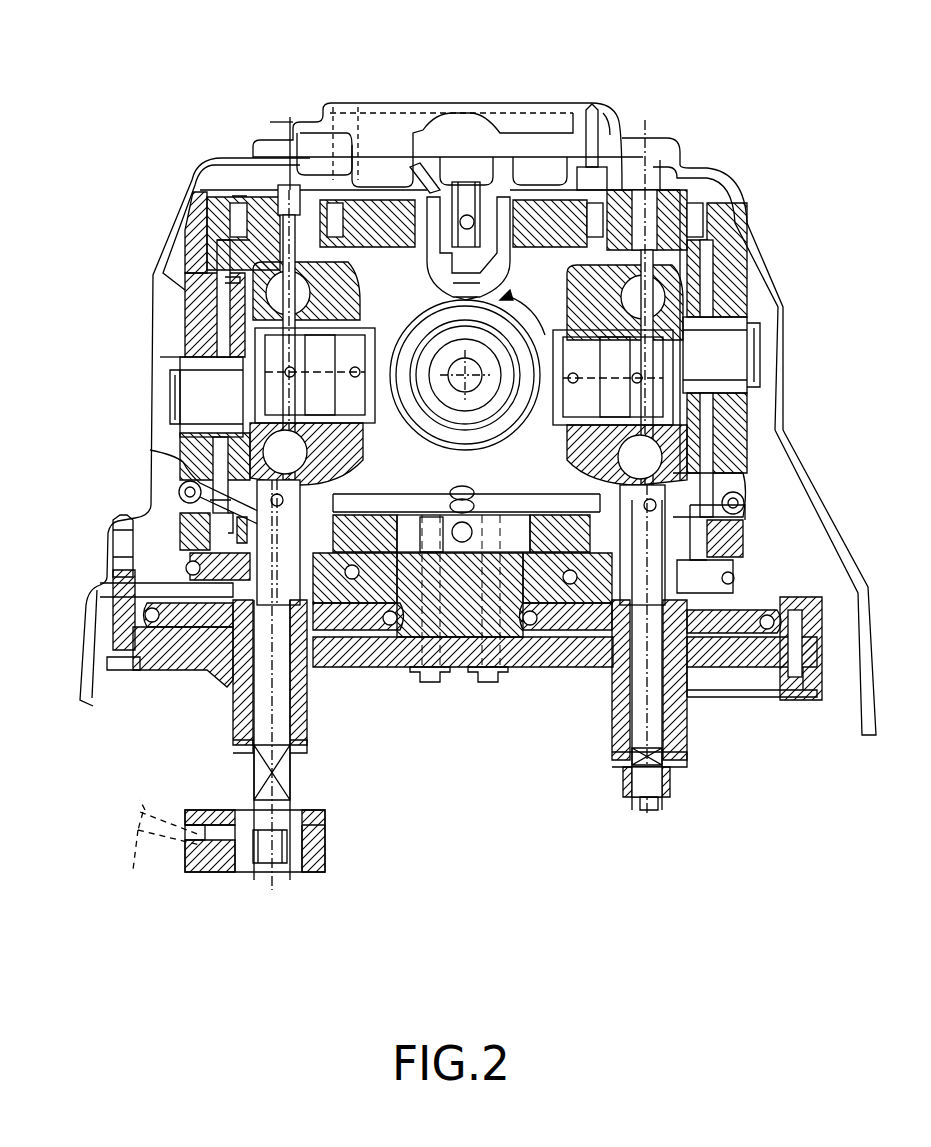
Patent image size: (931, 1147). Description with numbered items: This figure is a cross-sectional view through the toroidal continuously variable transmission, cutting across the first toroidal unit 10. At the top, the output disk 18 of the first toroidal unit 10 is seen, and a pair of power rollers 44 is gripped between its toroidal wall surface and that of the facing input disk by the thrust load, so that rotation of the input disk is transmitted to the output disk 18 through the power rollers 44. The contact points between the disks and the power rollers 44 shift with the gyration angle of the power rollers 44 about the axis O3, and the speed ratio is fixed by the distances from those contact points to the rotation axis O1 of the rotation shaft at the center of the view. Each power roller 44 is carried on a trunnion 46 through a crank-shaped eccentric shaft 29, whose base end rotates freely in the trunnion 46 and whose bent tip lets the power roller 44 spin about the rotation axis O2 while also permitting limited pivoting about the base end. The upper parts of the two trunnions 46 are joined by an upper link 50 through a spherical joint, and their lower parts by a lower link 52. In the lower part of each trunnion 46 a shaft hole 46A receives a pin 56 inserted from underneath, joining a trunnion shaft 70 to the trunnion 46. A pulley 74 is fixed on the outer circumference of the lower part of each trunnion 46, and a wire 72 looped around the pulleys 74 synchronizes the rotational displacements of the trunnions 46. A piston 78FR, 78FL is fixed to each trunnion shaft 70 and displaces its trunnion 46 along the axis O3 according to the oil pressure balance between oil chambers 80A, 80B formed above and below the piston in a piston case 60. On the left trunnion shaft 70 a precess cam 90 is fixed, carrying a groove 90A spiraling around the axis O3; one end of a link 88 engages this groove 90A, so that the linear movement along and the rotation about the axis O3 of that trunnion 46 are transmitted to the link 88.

The first toroidal unit 10 is at (534, 78).
The output disk 18 is at (397, 257).
The eccentric shaft 29 is at (190, 380).
The power roller 44 is at (327, 275).
The trunnion 46 is at (205, 275).
The shaft hole 46A is at (200, 465).
The upper link 50 is at (215, 210).
The lower link 52 is at (747, 533).
The pin 56 is at (327, 487).
The piston case 60 is at (806, 600).
The trunnion shaft 70 is at (317, 512).
The wire 72 is at (160, 590).
The pulley 74 is at (187, 563).
The piston 78FL is at (350, 665).
The piston 78FR is at (552, 628).
The oil chamber 80A is at (160, 605).
The oil chamber 80B is at (130, 655).
The link 88 is at (148, 855).
The precess cam 90 is at (185, 873).
The groove 90A is at (187, 837).
The rotation axis O1 is at (460, 365).
The rotation axis O2 is at (367, 350).
The axis O3 is at (287, 127).